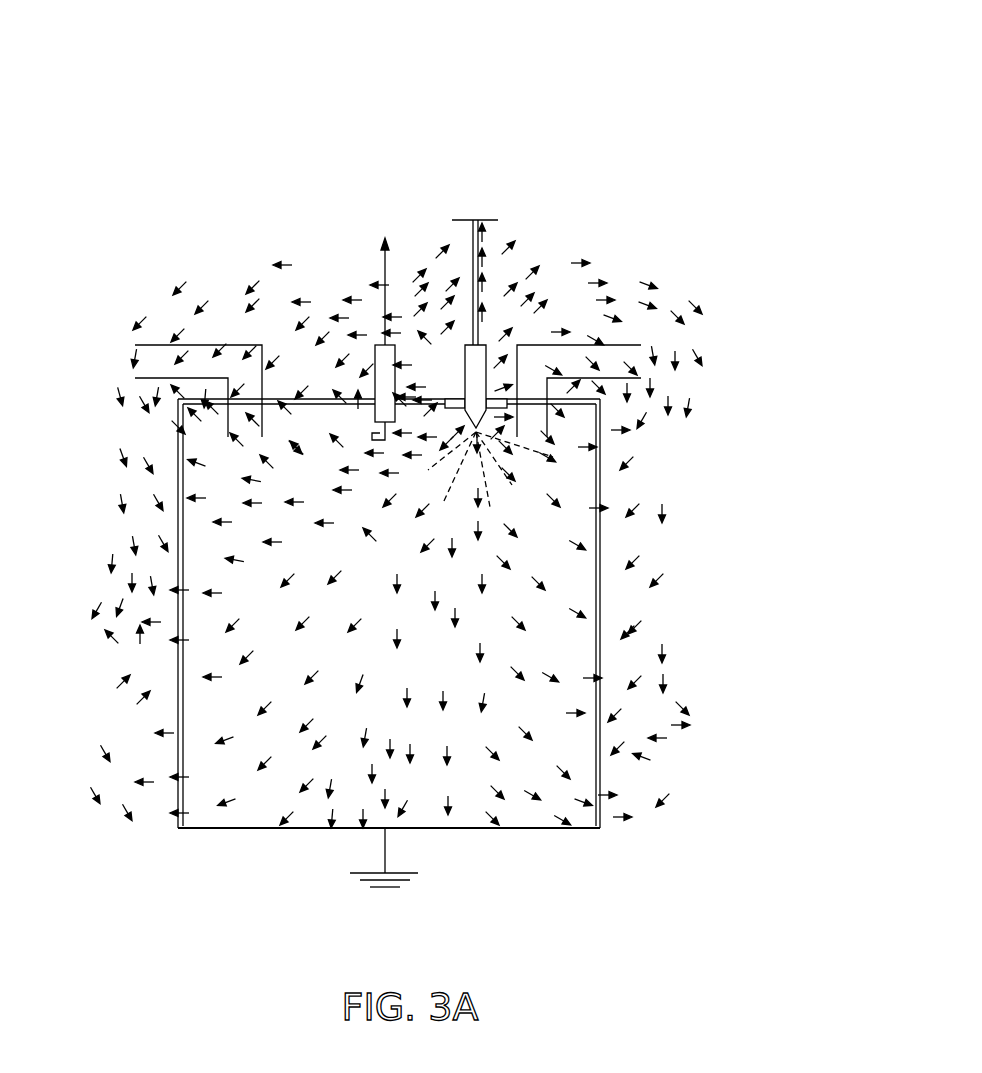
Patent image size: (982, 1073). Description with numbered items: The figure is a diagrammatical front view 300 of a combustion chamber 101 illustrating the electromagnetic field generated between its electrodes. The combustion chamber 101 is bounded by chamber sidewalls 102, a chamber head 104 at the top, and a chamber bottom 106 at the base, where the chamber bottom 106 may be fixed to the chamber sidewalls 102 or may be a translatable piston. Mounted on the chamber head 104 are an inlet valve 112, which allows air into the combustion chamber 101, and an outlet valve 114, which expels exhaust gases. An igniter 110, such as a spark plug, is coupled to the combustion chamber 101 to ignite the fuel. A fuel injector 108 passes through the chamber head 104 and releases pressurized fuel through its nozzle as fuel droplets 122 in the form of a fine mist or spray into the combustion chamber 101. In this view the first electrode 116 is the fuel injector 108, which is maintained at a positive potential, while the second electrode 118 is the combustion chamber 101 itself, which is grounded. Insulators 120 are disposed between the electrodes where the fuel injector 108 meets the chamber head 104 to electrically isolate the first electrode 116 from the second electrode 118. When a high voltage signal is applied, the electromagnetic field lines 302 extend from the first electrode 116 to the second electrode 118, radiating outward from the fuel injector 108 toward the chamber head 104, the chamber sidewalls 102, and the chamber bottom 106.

The front view 300 is at (672, 74).
The combustion chamber 101 is at (449, 556).
The chamber sidewalls 102 is at (600, 615).
The chamber head 104 is at (285, 399).
The chamber bottom 106 is at (548, 829).
The fuel injector 108 is at (478, 345).
The igniter 110 is at (377, 377).
The inlet valve 112 is at (163, 345).
The outlet valve 114 is at (630, 345).
The first electrode 116 is at (472, 232).
The second electrode 118 is at (388, 848).
The insulators 120 is at (452, 398).
The fuel droplets 122 is at (488, 472).
The electromagnetic field lines 302 is at (688, 404).